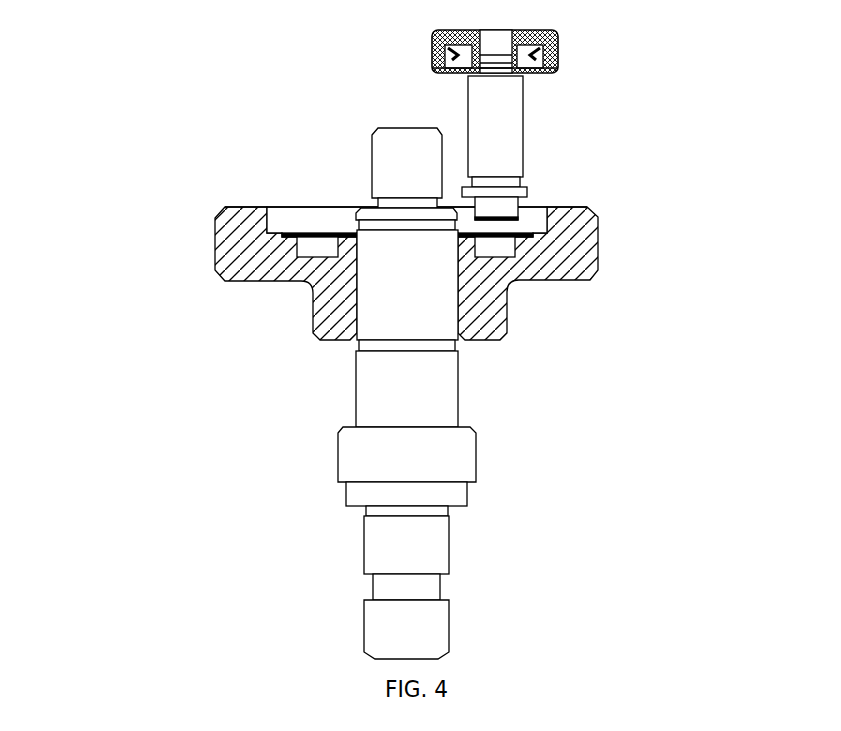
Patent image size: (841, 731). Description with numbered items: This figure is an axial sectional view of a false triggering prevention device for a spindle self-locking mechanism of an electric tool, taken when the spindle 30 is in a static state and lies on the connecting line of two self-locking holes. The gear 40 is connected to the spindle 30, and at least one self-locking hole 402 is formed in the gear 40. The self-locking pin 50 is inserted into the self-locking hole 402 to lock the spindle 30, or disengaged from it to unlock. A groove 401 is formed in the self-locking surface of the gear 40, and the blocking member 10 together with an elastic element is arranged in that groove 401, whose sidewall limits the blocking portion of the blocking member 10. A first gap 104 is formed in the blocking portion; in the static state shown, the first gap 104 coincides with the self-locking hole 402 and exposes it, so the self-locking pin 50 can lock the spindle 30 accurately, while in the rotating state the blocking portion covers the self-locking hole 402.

The blocking member 10 is at (371, 309).
The spindle 30 is at (415, 308).
The gear 40 is at (253, 258).
The self-locking pin 50 is at (500, 123).
The first gap 104 is at (497, 237).
The groove 401 is at (283, 218).
The self-locking hole 402 is at (487, 247).